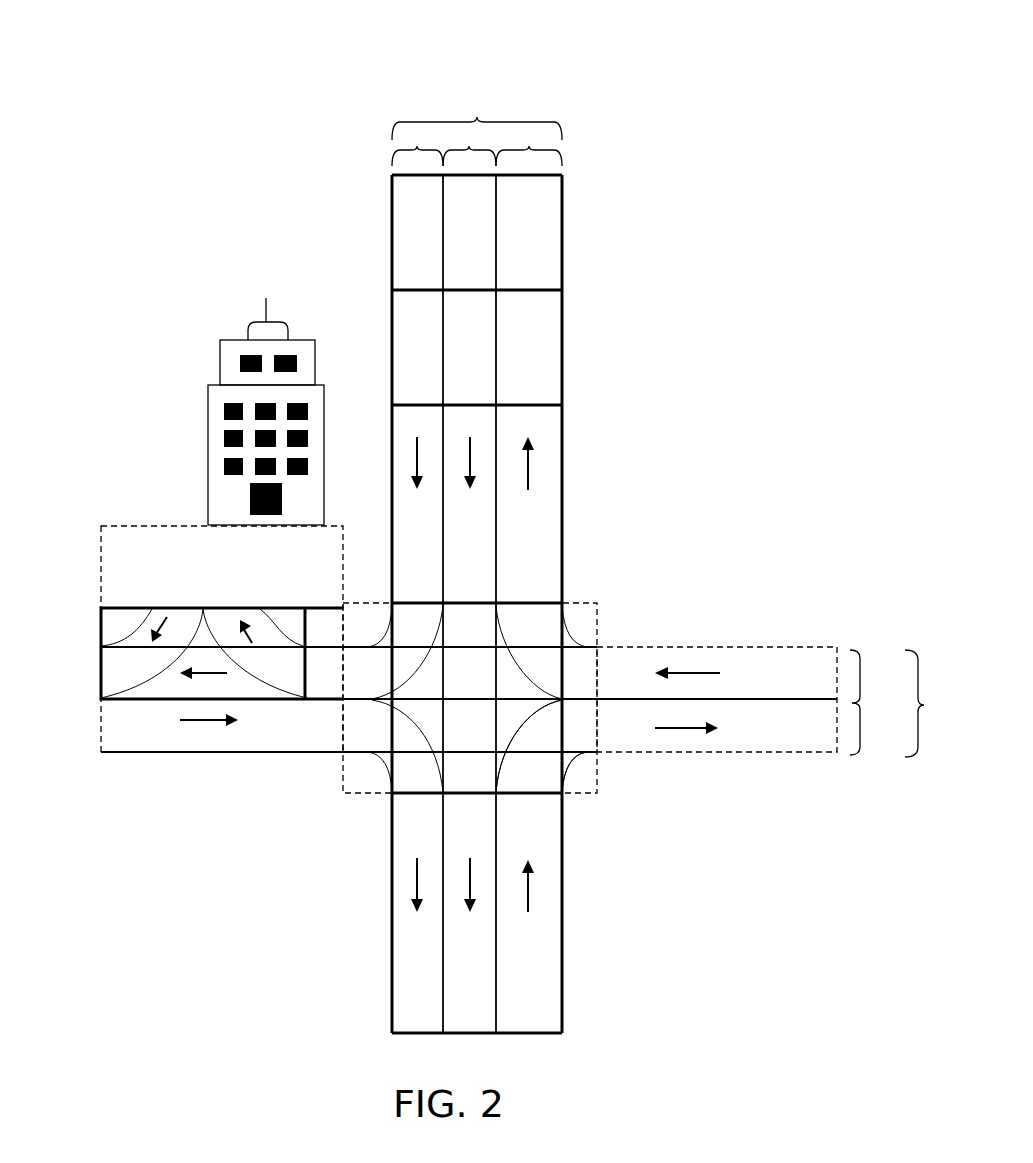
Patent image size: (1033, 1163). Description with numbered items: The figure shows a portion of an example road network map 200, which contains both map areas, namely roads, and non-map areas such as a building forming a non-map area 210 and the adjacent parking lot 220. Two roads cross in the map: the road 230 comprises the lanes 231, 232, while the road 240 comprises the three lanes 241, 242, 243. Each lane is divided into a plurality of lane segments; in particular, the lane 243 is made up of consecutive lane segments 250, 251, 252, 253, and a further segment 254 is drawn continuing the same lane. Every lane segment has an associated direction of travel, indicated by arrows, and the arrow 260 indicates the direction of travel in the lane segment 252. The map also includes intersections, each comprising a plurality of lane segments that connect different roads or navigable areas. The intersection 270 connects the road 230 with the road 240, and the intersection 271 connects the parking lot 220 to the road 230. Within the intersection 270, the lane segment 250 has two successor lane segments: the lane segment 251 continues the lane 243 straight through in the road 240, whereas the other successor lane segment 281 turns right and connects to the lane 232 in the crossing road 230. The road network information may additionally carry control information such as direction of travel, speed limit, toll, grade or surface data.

The road network map 200 is at (192, 70).
The non-map area 210 is at (255, 411).
The parking lot 220 is at (222, 641).
The road 230 is at (775, 702).
The lane 231 is at (776, 679).
The lane 232 is at (776, 734).
The road 240 is at (470, 553).
The lane 241 is at (424, 578).
The lane 242 is at (475, 578).
The lane 243 is at (529, 578).
The lane segment 250 is at (477, 852).
The lane segment 251 is at (548, 774).
The lane segment 252 is at (477, 520).
The lane segment 253 is at (477, 374).
The road segment 254 is at (477, 262).
The arrow 260 is at (519, 454).
The intersection 270 is at (598, 598).
The intersection 271 is at (101, 620).
The lane segment 281 is at (572, 757).